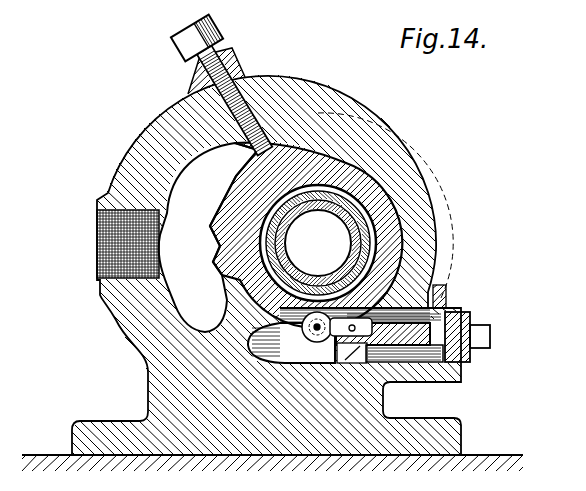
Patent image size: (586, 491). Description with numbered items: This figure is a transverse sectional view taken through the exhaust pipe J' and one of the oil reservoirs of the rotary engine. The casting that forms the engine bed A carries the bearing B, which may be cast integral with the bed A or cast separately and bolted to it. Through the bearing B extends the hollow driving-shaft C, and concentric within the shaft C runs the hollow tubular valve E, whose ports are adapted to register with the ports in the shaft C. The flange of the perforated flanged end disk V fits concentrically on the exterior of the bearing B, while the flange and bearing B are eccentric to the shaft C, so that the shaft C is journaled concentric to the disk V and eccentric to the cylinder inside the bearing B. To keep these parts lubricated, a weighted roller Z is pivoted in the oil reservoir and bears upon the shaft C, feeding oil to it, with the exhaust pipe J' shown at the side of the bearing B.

The bed A is at (476, 462).
The bearings B is at (166, 394).
The hollow driving-shaft C is at (370, 242).
The hollow tubular valve E is at (395, 249).
The exhaust pipe J' is at (109, 253).
The perforated flanged end disks V is at (433, 362).
The weighted roller Z is at (312, 335).